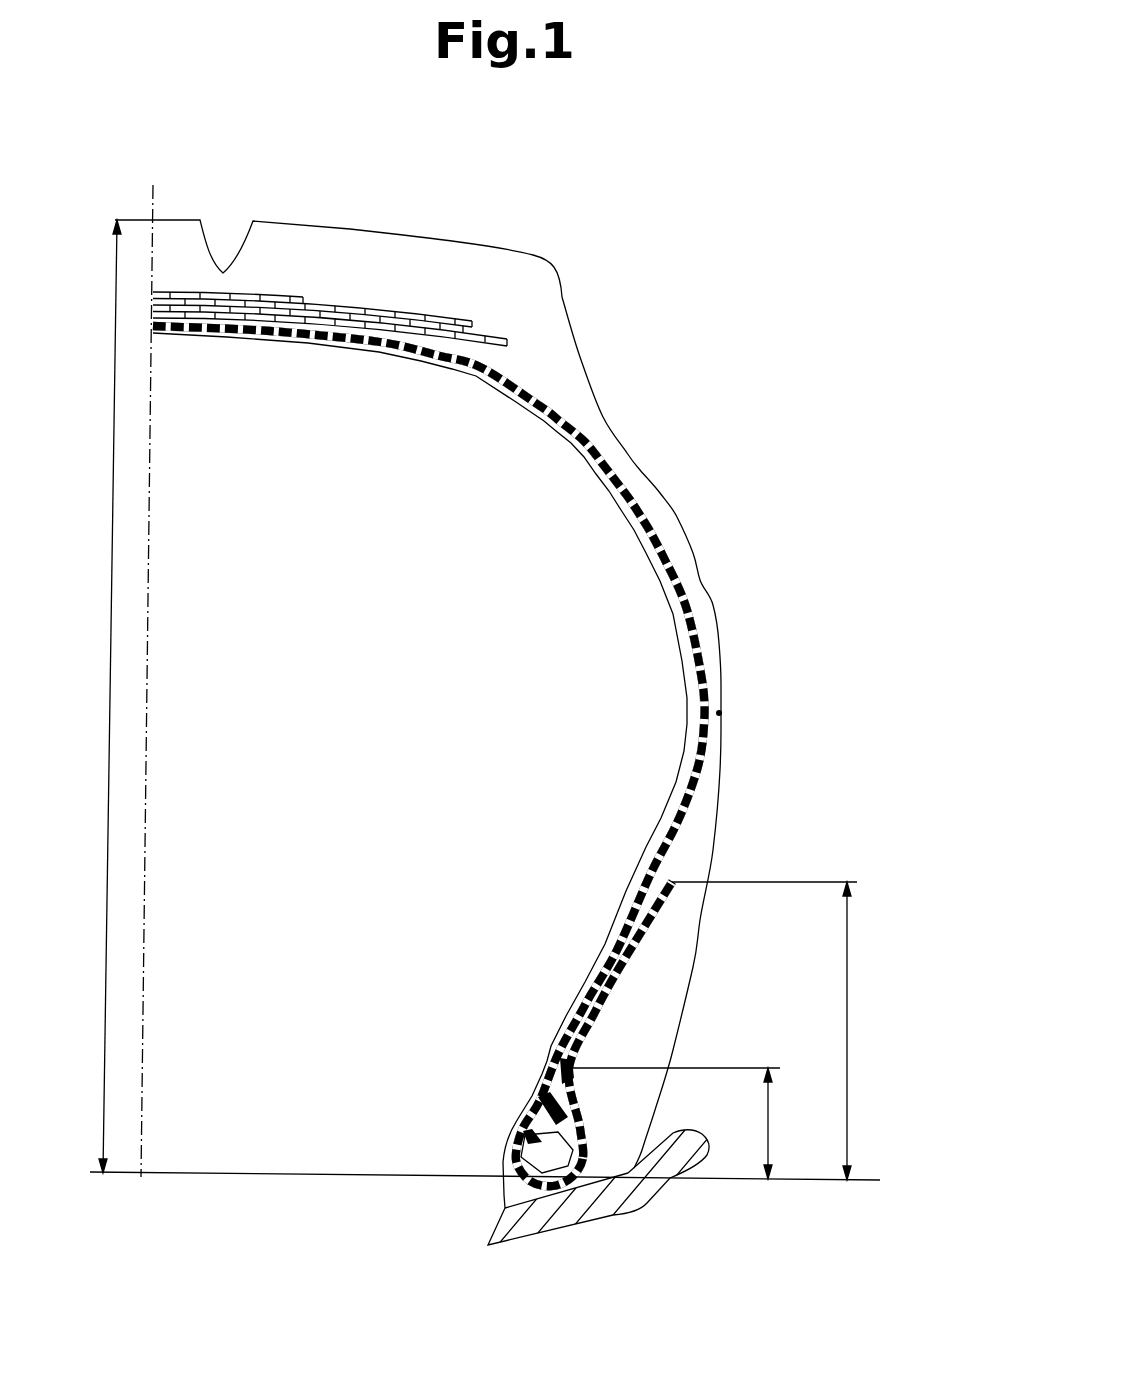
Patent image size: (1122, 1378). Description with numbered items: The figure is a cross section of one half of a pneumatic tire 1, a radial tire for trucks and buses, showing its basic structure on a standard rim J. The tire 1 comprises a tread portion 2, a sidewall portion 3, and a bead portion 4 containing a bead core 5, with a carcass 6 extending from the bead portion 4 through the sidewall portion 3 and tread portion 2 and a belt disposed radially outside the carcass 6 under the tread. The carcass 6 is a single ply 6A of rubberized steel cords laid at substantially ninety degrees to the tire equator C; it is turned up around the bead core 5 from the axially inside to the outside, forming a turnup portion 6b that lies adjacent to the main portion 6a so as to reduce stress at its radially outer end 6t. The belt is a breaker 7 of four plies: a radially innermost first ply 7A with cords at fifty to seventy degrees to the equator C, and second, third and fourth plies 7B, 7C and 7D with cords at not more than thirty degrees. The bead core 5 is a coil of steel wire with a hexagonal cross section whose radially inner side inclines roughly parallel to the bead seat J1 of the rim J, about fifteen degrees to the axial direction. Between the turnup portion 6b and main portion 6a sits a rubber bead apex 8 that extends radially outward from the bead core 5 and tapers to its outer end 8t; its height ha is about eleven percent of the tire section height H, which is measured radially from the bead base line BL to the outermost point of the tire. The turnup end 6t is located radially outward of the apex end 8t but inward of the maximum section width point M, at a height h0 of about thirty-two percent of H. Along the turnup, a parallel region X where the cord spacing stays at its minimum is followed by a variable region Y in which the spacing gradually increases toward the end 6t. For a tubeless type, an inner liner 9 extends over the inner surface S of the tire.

The tire 1 is at (479, 667).
The tread portion 2 is at (410, 205).
The sidewall portion 3 is at (684, 732).
The bead portion 4 is at (695, 1055).
The bead core 5 is at (537, 1148).
The carcass 6 is at (490, 756).
The carcass ply 6A is at (512, 765).
The main portion 6a is at (680, 753).
The turnup portion 6b is at (615, 953).
The radially outer end of the turnup portion 6t is at (676, 879).
The breaker 7 is at (330, 363).
The first ply 7A is at (170, 313).
The second ply 7B is at (228, 312).
The third ply 7C is at (258, 310).
The fourth ply 7D is at (160, 390).
The bead apex 8 is at (502, 1051).
The outer end of the bead apex 8t is at (560, 1065).
The inner liner 9 is at (674, 603).
The inner surface S is at (678, 655).
The maximum tire section width point M is at (721, 713).
The parallel region X is at (560, 1043).
The variable region Y is at (633, 967).
The standard rim J is at (584, 1214).
The bead seat J1 is at (493, 1210).
The tire equator C is at (151, 668).
The tire section height H is at (110, 696).
The height of the outer end of the turnup portion h0 is at (767, 1031).
The height of the outer end of the bead apex ha is at (674, 1123).
The bead base line BL is at (802, 1183).